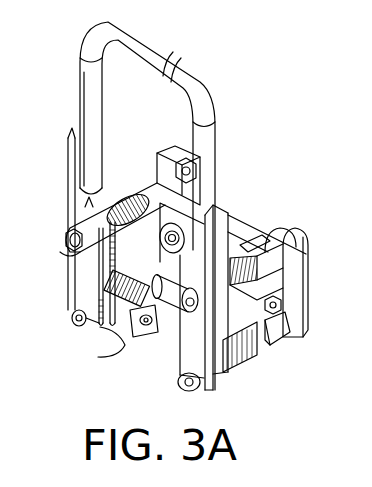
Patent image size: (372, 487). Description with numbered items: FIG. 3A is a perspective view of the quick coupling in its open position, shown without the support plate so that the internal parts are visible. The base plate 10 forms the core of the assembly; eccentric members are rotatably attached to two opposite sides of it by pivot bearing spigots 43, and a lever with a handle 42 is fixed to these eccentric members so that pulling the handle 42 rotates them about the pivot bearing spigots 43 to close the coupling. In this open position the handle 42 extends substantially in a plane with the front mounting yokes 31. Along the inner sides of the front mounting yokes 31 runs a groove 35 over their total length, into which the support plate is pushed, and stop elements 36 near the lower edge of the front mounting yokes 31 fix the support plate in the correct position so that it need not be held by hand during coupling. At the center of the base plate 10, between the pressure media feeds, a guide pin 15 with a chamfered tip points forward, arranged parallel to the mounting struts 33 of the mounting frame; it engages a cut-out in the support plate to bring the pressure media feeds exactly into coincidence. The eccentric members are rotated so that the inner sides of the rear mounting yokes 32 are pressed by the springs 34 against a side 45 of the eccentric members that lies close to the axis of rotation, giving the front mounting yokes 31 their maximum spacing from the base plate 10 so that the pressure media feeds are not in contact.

The base plate 10 is at (150, 186).
The guide pin 15 is at (154, 338).
The front mounting yokes 31 is at (76, 288).
The rear mounting yokes 32 is at (303, 266).
The mounting struts 33 is at (262, 258).
The springs 34 is at (244, 265).
The groove 35 is at (70, 245).
The stop elements 36 is at (122, 325).
The handle 42 is at (214, 140).
The pivot bearing spigots 43 is at (290, 340).
The side of the eccentric members 45 is at (284, 305).